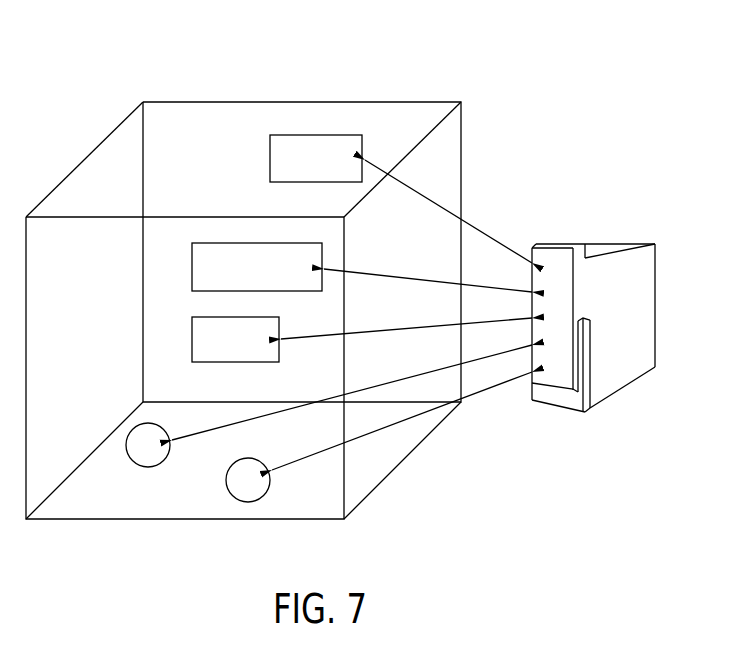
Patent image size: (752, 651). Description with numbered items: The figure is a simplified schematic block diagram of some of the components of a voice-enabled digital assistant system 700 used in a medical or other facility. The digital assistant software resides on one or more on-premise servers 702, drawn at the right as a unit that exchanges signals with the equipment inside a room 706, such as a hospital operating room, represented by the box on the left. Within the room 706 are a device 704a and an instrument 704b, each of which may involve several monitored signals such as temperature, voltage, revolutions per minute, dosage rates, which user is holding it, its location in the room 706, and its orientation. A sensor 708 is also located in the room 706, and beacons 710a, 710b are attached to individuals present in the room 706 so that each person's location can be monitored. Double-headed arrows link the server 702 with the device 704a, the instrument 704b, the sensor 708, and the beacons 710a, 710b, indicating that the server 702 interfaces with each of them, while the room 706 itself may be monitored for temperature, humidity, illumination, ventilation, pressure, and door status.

The voice-enabled digital assistant system 700 is at (505, 47).
The on-premise server 702 is at (637, 242).
The device 704a is at (192, 325).
The instrument 704b is at (192, 250).
The room 706 is at (461, 151).
The sensor 708 is at (270, 148).
The beacon 710a is at (128, 457).
The beacon 710b is at (227, 478).